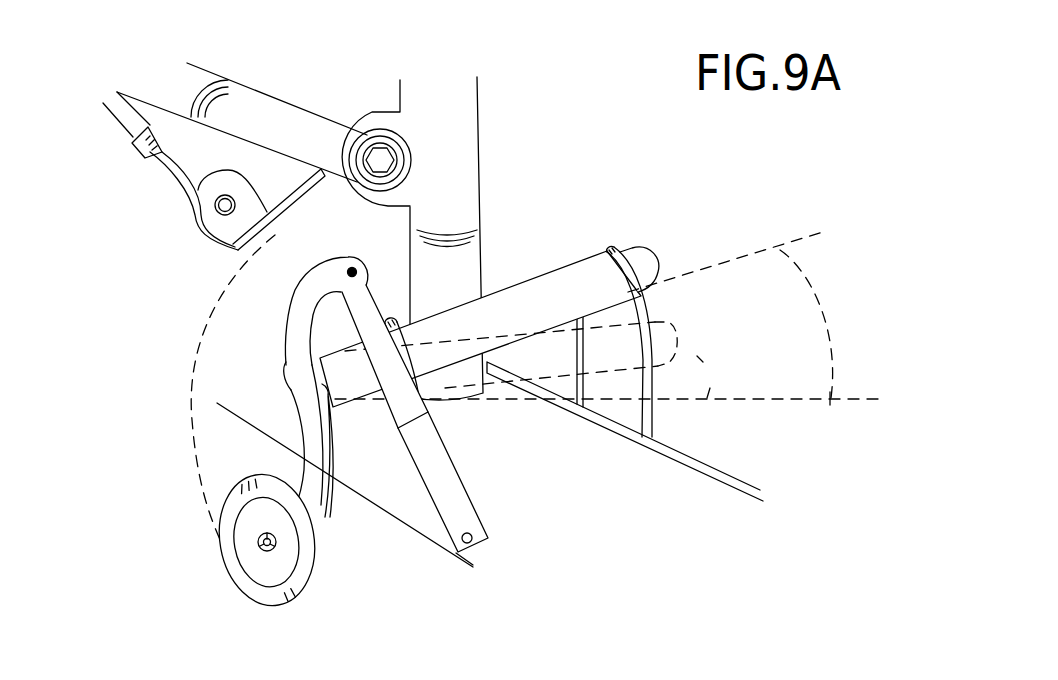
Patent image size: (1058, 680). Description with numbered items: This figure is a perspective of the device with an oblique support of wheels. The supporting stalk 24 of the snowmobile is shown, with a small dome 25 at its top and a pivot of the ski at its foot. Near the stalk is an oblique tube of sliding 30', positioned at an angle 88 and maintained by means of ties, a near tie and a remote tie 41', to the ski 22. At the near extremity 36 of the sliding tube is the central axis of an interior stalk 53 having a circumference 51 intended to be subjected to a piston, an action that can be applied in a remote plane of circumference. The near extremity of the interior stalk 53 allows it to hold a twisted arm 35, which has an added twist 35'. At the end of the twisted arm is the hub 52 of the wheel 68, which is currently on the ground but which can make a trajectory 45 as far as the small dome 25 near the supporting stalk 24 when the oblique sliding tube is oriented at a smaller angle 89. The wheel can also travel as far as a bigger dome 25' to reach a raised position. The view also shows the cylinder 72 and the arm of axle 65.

The ski 22 is at (593, 507).
The supporting stalk 24 is at (478, 172).
The small dome 25 is at (370, 134).
The bigger dome 25' is at (219, 156).
The oblique tube of sliding 30' is at (487, 288).
The interior stalk 53 is at (639, 262).
The remote tie 41' is at (706, 342).
The angle 88 is at (610, 318).
The smaller angle 89 is at (538, 360).
The trajectory 45 is at (230, 273).
The arm of axle 65 is at (290, 312).
The cylinder 72 is at (457, 462).
The near extremity 36 is at (285, 380).
The twisted arm 35 is at (329, 494).
The circumference 51 is at (326, 387).
The added twist 35' is at (296, 485).
The wheel 68 is at (267, 593).
The hub 52 is at (258, 542).